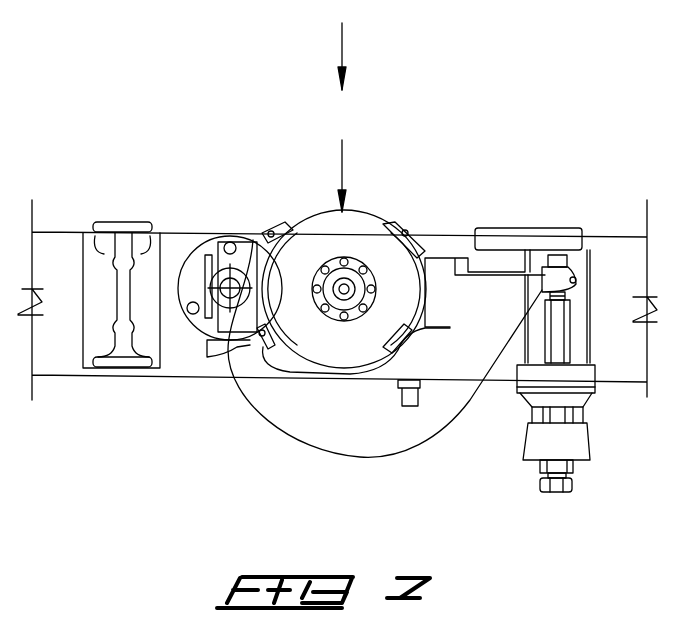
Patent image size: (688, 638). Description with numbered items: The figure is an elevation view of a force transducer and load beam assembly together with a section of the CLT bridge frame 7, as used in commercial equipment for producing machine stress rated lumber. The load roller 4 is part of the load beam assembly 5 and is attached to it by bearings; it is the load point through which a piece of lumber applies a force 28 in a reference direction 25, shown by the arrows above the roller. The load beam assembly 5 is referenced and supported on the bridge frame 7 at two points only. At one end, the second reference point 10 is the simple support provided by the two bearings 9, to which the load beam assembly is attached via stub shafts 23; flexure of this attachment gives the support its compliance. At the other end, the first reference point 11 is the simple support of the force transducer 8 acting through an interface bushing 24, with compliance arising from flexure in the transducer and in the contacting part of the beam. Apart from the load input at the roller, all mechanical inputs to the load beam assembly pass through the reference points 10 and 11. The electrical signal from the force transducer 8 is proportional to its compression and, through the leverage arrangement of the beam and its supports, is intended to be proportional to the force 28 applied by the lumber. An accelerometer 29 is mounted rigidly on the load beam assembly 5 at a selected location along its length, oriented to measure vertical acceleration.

The load roller 4 is at (373, 218).
The load beam assembly 5 is at (312, 420).
The bridge frame 7 is at (118, 377).
The force transducer 8 is at (592, 398).
The bearings 9 is at (193, 247).
The second reference point 10 is at (253, 240).
The first reference point 11 is at (560, 298).
The stub shafts 23 is at (238, 342).
The interface bushing 24 is at (572, 332).
The reference direction 25 is at (343, 43).
The force 28 is at (345, 170).
The accelerometer 29 is at (397, 398).